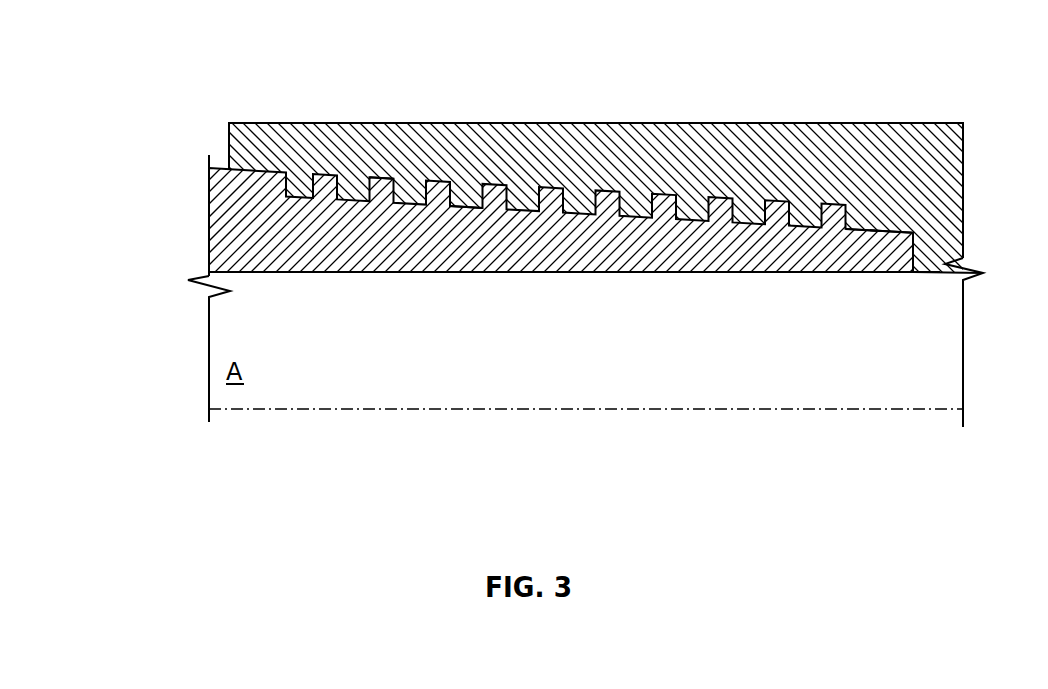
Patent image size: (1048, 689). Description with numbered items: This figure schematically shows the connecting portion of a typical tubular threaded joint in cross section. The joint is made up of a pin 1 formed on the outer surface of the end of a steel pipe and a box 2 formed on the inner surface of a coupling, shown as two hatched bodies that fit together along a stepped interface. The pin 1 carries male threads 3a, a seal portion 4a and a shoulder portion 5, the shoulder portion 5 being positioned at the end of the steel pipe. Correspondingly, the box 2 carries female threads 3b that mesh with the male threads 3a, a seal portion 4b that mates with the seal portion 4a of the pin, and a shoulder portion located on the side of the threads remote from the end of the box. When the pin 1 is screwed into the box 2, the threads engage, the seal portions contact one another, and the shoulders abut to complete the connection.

The pin 1 is at (196, 223).
The box 2 is at (737, 92).
The male threads 3a is at (382, 177).
The female threads 3b is at (468, 207).
The seal portion 4a is at (868, 231).
The seal portion 4b is at (878, 232).
The shoulder portion 5 is at (915, 258).